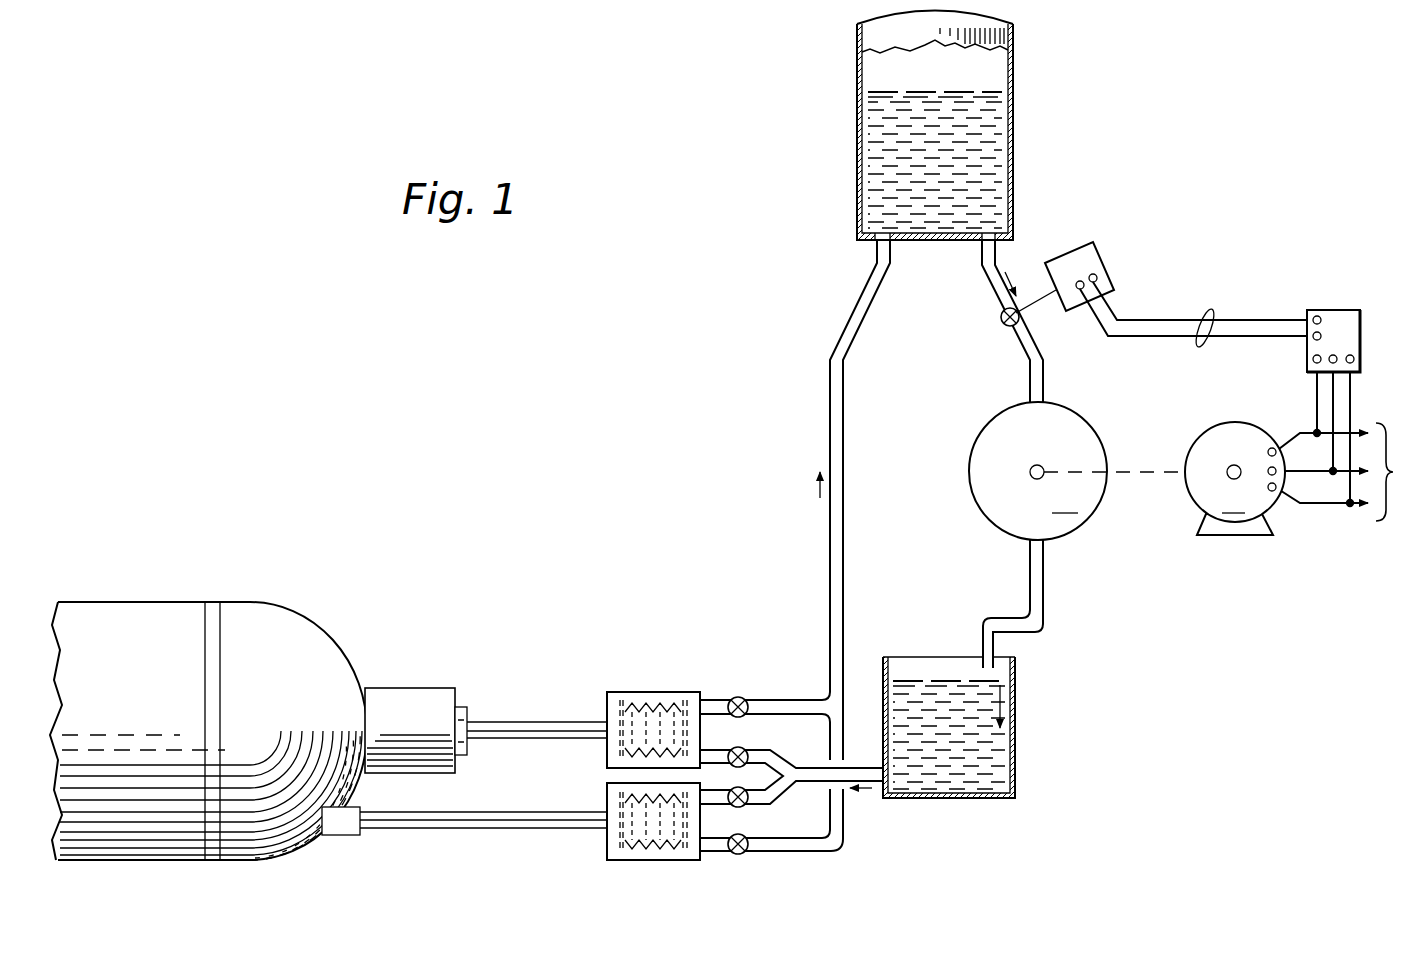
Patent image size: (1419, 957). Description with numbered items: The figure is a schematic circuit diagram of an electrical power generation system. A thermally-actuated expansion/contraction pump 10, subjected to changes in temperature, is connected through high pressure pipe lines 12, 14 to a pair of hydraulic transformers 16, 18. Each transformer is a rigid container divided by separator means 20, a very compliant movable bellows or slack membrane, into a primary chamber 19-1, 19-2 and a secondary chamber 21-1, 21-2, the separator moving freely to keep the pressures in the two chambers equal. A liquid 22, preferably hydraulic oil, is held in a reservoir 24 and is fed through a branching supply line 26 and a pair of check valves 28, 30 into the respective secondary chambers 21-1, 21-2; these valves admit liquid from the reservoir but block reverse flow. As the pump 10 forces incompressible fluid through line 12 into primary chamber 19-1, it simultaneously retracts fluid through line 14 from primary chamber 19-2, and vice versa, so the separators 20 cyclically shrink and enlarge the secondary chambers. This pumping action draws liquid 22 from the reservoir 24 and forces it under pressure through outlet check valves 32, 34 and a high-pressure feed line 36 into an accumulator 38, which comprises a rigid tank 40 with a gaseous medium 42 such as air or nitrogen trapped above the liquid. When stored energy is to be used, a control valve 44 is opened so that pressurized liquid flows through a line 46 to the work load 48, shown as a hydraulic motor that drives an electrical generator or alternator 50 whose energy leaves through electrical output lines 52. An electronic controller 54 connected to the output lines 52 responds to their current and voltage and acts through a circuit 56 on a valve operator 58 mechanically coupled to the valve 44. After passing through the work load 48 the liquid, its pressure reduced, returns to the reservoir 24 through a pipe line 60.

The thermally-actuated expansion/contraction pump 10 is at (183, 588).
The high pressure pipe line 12 is at (515, 722).
The high pressure pipe line 14 is at (440, 830).
The hydraulic transformer 16 is at (659, 688).
The hydraulic transformer 18 is at (658, 864).
The primary chamber 19-1 is at (606, 692).
The primary chamber 19-2 is at (607, 850).
The separator means 20 is at (672, 716).
The secondary chamber 21-1 is at (702, 692).
The secondary chamber 21-2 is at (702, 860).
The liquid 22 is at (1012, 160).
The reservoir 24 is at (1012, 798).
The supply line 26 is at (862, 768).
The check valve 28 is at (748, 752).
The check valve 30 is at (746, 805).
The outlet check valve 32 is at (746, 700).
The outlet check valve 34 is at (748, 852).
The high-pressure feed line 36 is at (845, 582).
The accumulator 38 is at (855, 200).
The rigid tank 40 is at (857, 117).
The gaseous medium 42 is at (1015, 72).
The control valve 44 is at (1003, 314).
The line 46 is at (1030, 383).
The work load 48 is at (967, 450).
The electrical generator or alternator 50 is at (1212, 425).
The electrical output lines 52 is at (1347, 446).
The electronic controller 54 is at (1338, 312).
The circuit 56 is at (1213, 315).
The valve operator 58 is at (1110, 250).
The pipe line 60 is at (1043, 630).